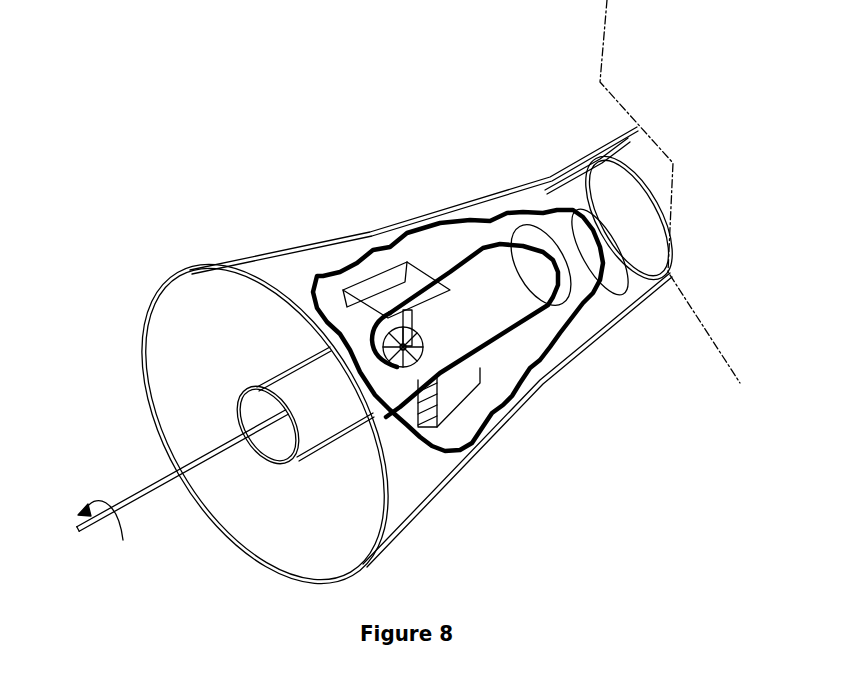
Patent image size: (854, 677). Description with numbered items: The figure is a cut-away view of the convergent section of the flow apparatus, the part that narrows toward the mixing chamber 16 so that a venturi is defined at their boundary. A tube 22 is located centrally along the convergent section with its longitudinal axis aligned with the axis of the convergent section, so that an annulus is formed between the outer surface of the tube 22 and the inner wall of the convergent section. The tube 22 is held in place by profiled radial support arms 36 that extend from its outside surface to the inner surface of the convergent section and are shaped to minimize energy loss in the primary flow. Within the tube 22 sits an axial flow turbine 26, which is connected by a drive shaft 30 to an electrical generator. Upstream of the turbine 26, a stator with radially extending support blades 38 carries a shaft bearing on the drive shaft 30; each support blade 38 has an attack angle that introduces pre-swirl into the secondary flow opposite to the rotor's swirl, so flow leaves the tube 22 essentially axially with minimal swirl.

The mixing chamber 16 is at (572, 165).
The tube 22 is at (247, 387).
The turbine 26 is at (450, 288).
The drive shaft 30 is at (93, 530).
The radial support arms 36 is at (455, 403).
The support blades 38 is at (395, 312).